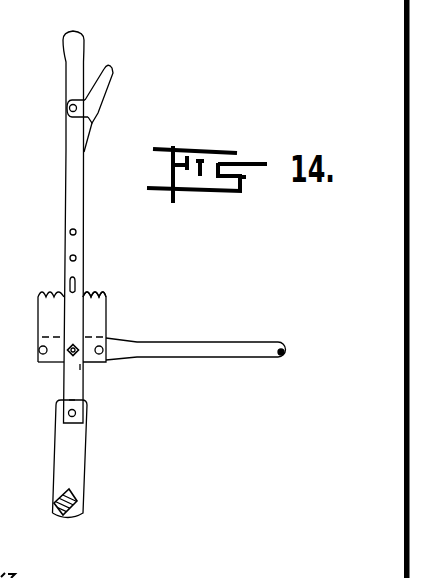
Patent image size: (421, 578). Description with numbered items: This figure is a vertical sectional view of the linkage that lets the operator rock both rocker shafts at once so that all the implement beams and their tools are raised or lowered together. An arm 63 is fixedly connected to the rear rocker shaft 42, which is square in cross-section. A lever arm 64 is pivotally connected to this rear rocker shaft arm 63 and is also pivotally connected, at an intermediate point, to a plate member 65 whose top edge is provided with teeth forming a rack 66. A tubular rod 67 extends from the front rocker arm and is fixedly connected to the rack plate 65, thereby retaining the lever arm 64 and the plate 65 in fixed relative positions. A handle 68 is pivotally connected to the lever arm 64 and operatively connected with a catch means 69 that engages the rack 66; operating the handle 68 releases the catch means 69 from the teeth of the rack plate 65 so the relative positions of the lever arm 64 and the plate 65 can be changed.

The rear rocker shaft 42 is at (74, 513).
The arm 63 is at (87, 452).
The lever arm 64 is at (85, 187).
The plate member 65 is at (106, 312).
The rack 66 is at (95, 292).
The tubular rod 67 is at (198, 340).
The handle 68 is at (115, 88).
The catch means 69 is at (70, 282).